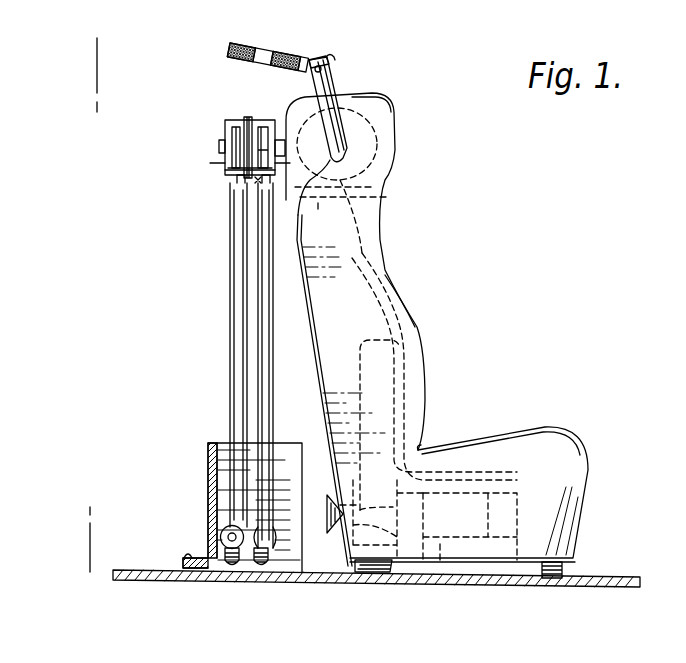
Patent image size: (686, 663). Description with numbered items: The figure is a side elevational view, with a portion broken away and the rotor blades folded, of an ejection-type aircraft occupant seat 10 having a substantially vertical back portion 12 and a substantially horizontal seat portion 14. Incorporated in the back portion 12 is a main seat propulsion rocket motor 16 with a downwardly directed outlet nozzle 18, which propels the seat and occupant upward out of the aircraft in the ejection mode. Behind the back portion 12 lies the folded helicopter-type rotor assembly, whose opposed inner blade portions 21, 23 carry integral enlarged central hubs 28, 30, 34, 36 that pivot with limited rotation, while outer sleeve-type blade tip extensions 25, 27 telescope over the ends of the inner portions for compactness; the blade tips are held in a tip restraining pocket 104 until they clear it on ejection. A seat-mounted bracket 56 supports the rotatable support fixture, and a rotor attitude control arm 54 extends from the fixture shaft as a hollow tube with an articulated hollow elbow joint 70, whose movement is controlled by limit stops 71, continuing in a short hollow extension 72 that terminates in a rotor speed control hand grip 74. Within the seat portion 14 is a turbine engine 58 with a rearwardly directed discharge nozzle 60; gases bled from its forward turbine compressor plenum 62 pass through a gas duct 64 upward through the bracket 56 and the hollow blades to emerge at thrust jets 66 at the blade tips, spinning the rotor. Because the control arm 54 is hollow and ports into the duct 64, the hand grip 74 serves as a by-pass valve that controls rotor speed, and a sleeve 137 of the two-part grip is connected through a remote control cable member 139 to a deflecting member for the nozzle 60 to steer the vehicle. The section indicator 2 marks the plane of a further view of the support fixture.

The section line 2- 2 is at (88, 63).
The ejection-type aircraft occupant seat 10 is at (466, 400).
The back portion 12 is at (355, 334).
The seat portion 14 is at (541, 462).
The main seat propulsion rocket motor 16 is at (416, 567).
The outlet nozzle 18 is at (367, 571).
The inner blade portion 21 is at (230, 178).
The inner blade portion 23 is at (262, 181).
The blade tip extension 25 is at (237, 256).
The blade tip extension 27 is at (262, 283).
The central hub 28 is at (233, 135).
The hub assembly 30 is at (238, 121).
The central hub 34 is at (259, 149).
The central hub 36 is at (264, 122).
The rotor attitude control arm 54 is at (348, 86).
The bracket 56 is at (393, 174).
The turbine engine 58 is at (471, 567).
The discharge nozzle 60 is at (337, 527).
The forward turbine compressor plenum 62 is at (532, 567).
The gas duct 64 is at (377, 243).
The thrust jets 66 is at (250, 545).
The articulated hollow joint 70 is at (309, 77).
The limit stops 71 is at (331, 62).
The hollow extension 72 is at (310, 58).
The rotor speed control hand grip 74 is at (258, 42).
The tip restraining pocket 104 is at (208, 506).
The sleeve 137 is at (281, 52).
The remote control cable member 139 is at (330, 412).